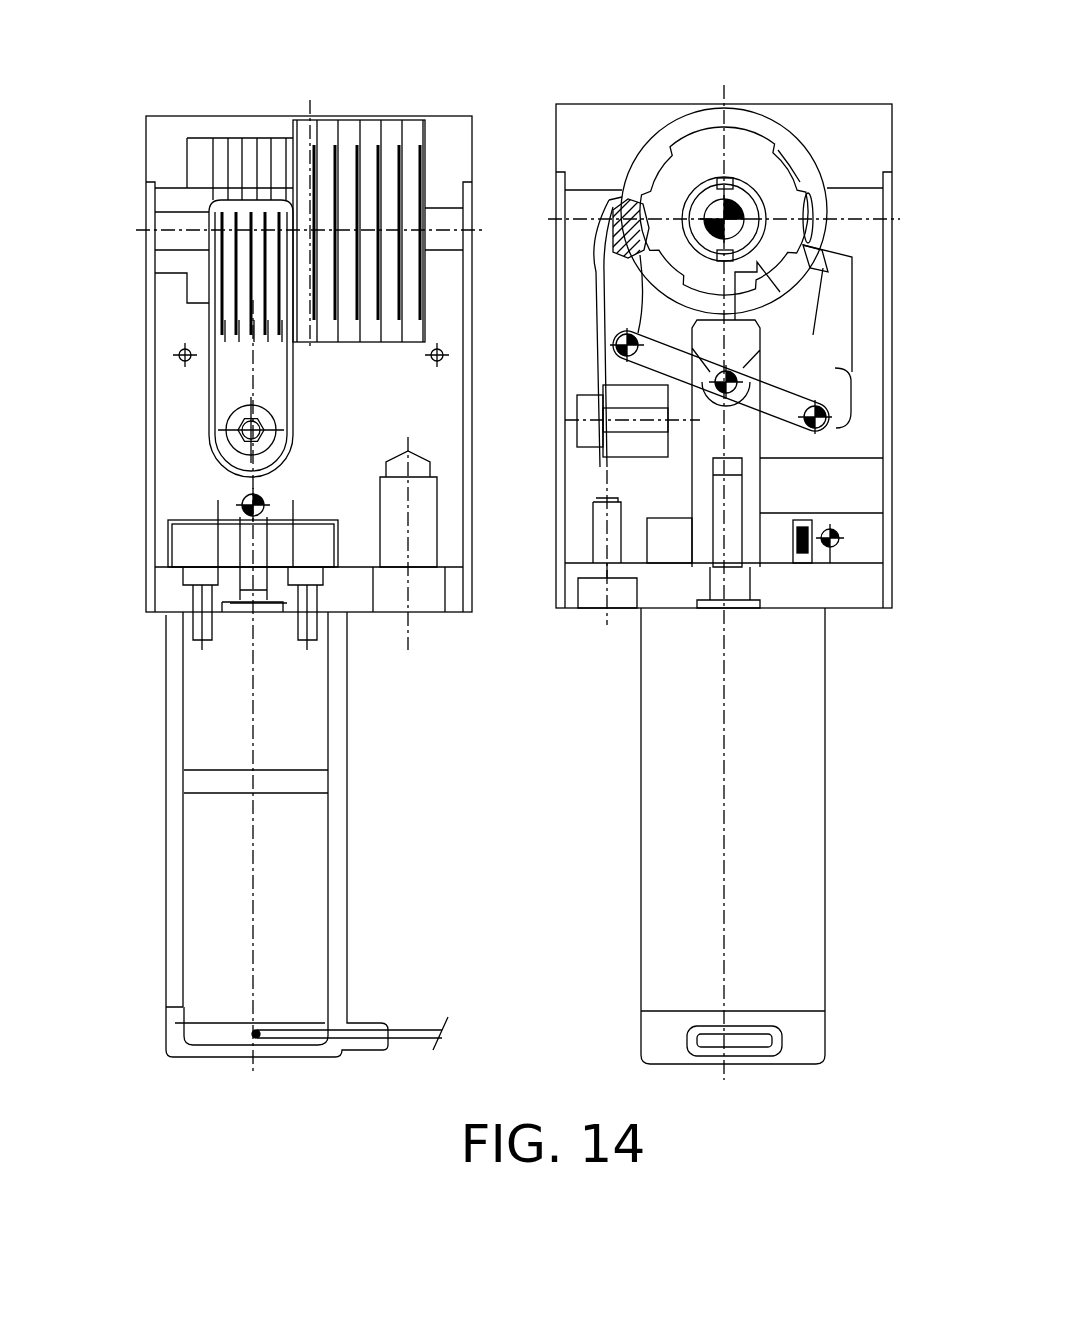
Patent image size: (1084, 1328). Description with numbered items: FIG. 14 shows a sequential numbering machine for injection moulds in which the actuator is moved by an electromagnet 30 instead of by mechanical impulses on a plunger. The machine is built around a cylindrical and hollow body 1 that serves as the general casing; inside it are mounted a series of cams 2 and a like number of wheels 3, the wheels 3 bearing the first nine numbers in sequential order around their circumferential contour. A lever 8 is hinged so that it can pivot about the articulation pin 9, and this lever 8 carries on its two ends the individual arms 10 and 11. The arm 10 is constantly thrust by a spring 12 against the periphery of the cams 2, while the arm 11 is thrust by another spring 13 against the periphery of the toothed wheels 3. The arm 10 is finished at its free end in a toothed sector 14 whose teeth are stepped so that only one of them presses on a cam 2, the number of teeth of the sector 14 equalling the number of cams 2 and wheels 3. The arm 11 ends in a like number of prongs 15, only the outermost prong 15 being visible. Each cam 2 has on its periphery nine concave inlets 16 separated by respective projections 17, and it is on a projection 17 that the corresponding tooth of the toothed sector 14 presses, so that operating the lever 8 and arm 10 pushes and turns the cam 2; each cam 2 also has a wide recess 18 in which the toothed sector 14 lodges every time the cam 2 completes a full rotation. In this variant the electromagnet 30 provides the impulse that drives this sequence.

The cylindrical and hollow body 1 is at (172, 388).
The cams 2 is at (286, 148).
The wheels 3 is at (412, 127).
The lever 8 is at (773, 407).
The articulation pin 9 is at (725, 367).
The arm 10 is at (835, 328).
The arm 11 is at (617, 277).
The spring 12 is at (850, 403).
The spring 13 is at (258, 242).
The toothed sector 14 is at (827, 252).
The prongs 15 is at (625, 203).
The concave inlets 16 is at (813, 205).
The projections 17 is at (718, 128).
The recess 18 is at (753, 275).
The electromagnet 30 is at (292, 851).